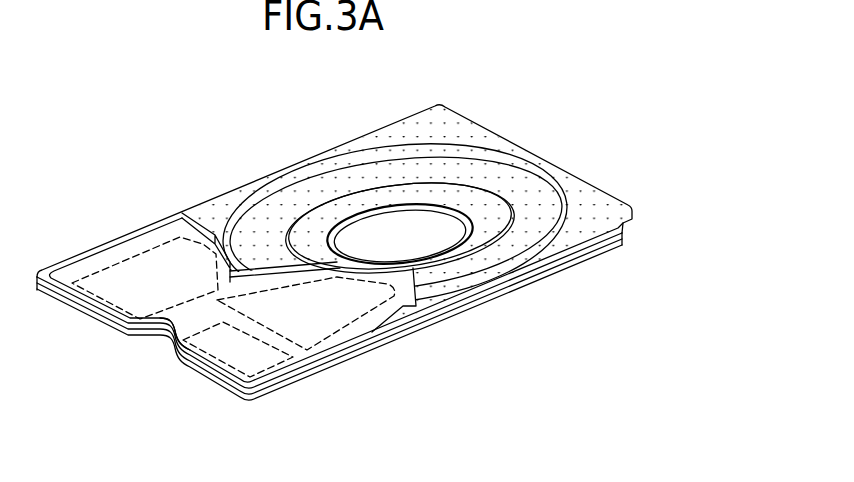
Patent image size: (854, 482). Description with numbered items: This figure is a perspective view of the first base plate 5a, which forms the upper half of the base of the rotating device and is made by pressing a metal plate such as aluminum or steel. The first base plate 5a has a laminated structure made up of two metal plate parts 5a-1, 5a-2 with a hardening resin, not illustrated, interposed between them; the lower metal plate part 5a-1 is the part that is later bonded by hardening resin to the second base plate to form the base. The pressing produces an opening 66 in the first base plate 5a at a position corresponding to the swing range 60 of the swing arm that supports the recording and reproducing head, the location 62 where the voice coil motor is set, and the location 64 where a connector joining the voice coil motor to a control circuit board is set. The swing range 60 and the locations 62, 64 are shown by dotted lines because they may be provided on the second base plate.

The first base plate 5a is at (449, 123).
The lower metal plate part 5a-1 is at (594, 251).
The metal plate part 5a-2 is at (600, 243).
The swing range 60 is at (340, 320).
The location where the voice coil motor is set 62 is at (163, 262).
The location where a connector is set 64 is at (267, 364).
The opening 66 is at (177, 318).